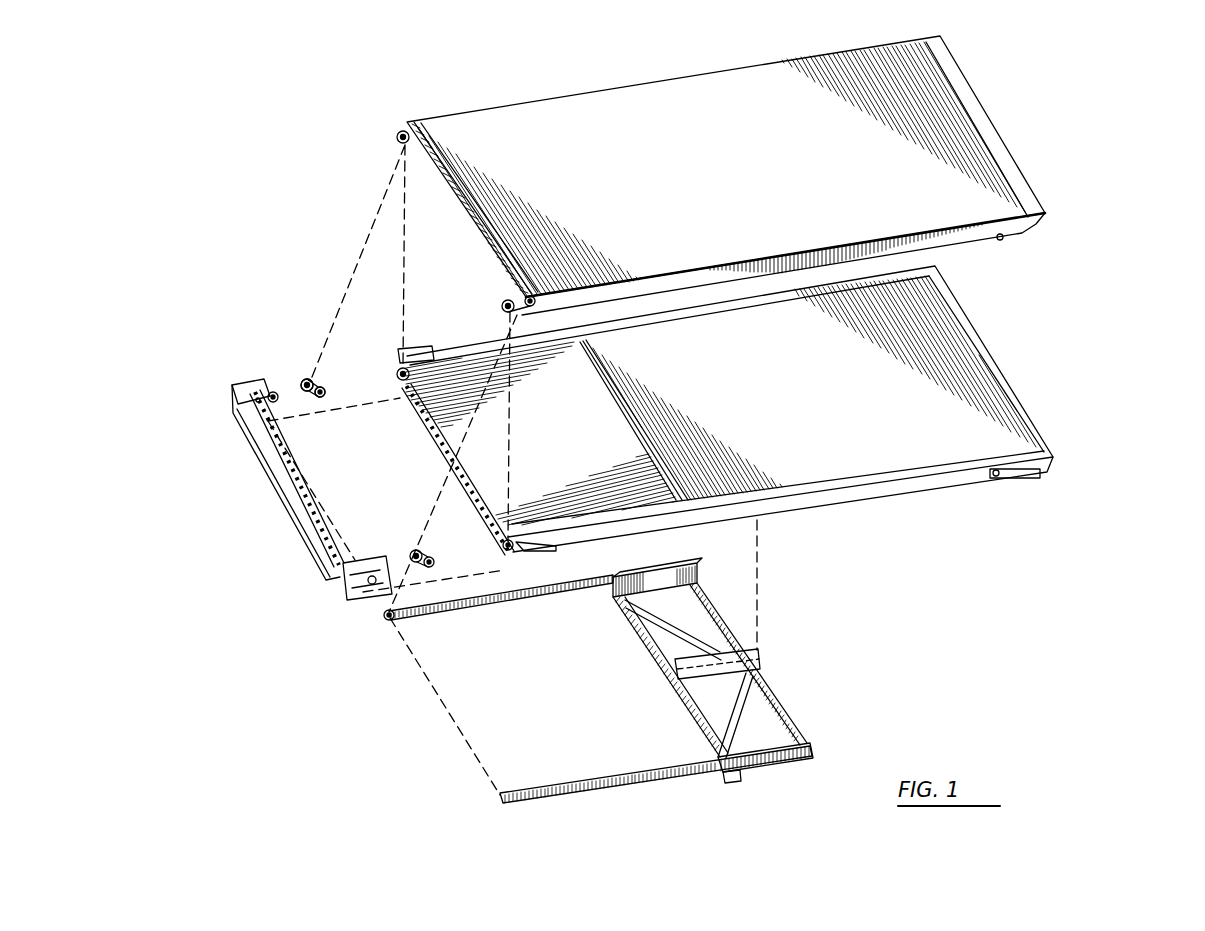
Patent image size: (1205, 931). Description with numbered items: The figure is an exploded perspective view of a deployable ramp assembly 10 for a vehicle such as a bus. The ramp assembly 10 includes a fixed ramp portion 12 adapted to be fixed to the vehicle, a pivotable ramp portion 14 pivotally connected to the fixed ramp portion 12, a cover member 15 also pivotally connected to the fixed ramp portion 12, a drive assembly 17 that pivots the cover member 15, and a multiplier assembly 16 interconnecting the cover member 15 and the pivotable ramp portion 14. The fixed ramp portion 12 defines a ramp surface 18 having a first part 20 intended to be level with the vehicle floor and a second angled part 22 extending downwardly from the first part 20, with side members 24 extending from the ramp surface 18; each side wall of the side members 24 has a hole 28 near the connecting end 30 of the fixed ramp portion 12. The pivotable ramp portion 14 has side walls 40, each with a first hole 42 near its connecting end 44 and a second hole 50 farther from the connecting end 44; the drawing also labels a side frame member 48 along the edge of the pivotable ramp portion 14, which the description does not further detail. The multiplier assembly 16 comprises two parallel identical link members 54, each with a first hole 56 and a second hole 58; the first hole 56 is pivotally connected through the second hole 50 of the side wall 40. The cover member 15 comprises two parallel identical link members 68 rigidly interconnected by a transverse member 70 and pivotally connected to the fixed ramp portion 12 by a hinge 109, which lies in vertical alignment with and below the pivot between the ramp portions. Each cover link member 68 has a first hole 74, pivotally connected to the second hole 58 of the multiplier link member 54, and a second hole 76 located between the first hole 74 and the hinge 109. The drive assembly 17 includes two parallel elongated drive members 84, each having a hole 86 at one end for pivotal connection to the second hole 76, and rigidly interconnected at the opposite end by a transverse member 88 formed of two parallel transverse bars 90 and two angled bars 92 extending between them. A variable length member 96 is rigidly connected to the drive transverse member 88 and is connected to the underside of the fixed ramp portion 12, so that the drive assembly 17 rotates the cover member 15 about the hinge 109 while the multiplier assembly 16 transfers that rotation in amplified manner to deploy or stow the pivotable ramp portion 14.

The ramp assembly 10 is at (252, 133).
The fixed ramp portion 12 is at (1028, 413).
The pivotable ramp portion 14 is at (1023, 167).
The cover member 15 is at (268, 500).
The multiplier assembly 16 is at (305, 378).
The drive assembly 17 is at (793, 711).
The ramp surface 18 is at (963, 387).
The first part 20 is at (893, 457).
The second angled part 22 is at (405, 368).
The side members 24 is at (820, 490).
The hole 28 is at (400, 398).
The connecting end 30 is at (440, 455).
The side wall 40 is at (967, 242).
The first hole 42 is at (397, 133).
The connecting end 44 is at (427, 165).
The right frame member of first panel 48 is at (963, 70).
The second hole 50 is at (510, 300).
The link members 54 is at (297, 368).
The first hole 56 is at (273, 392).
The second hole 58 is at (315, 368).
The link members 68 is at (258, 395).
The transverse member 70 is at (258, 447).
The first hole 74 is at (380, 560).
The second hole 76 is at (340, 583).
The drive members 84 is at (530, 597).
The hole 86 is at (517, 790).
The transverse member 88 is at (723, 611).
The transverse bars 90 is at (797, 730).
The angled bars 92 is at (748, 710).
The variable length member 96 is at (763, 655).
The hinge 109 is at (397, 617).